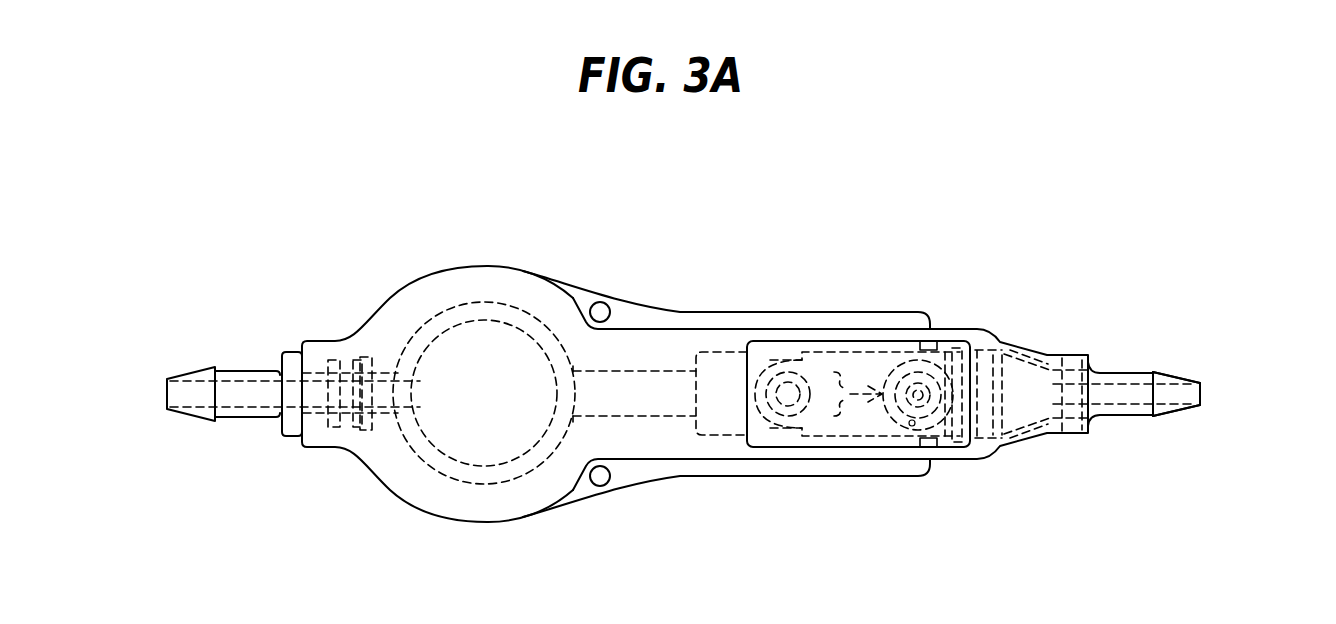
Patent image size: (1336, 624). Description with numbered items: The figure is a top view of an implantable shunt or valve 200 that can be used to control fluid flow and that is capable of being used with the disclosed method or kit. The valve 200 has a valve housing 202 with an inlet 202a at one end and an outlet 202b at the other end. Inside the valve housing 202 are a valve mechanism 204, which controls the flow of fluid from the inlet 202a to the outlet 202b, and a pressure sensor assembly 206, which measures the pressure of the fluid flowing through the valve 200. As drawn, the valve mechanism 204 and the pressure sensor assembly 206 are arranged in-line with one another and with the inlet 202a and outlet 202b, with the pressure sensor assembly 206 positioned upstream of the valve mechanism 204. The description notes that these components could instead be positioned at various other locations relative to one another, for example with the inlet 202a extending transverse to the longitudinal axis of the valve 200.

The implantable valve 200 is at (1016, 168).
The valve housing 202 is at (704, 477).
The inlet 202a is at (158, 391).
The outlet 202b is at (1210, 396).
The valve mechanism 204 is at (836, 290).
The pressure sensor assembly 206 is at (461, 367).